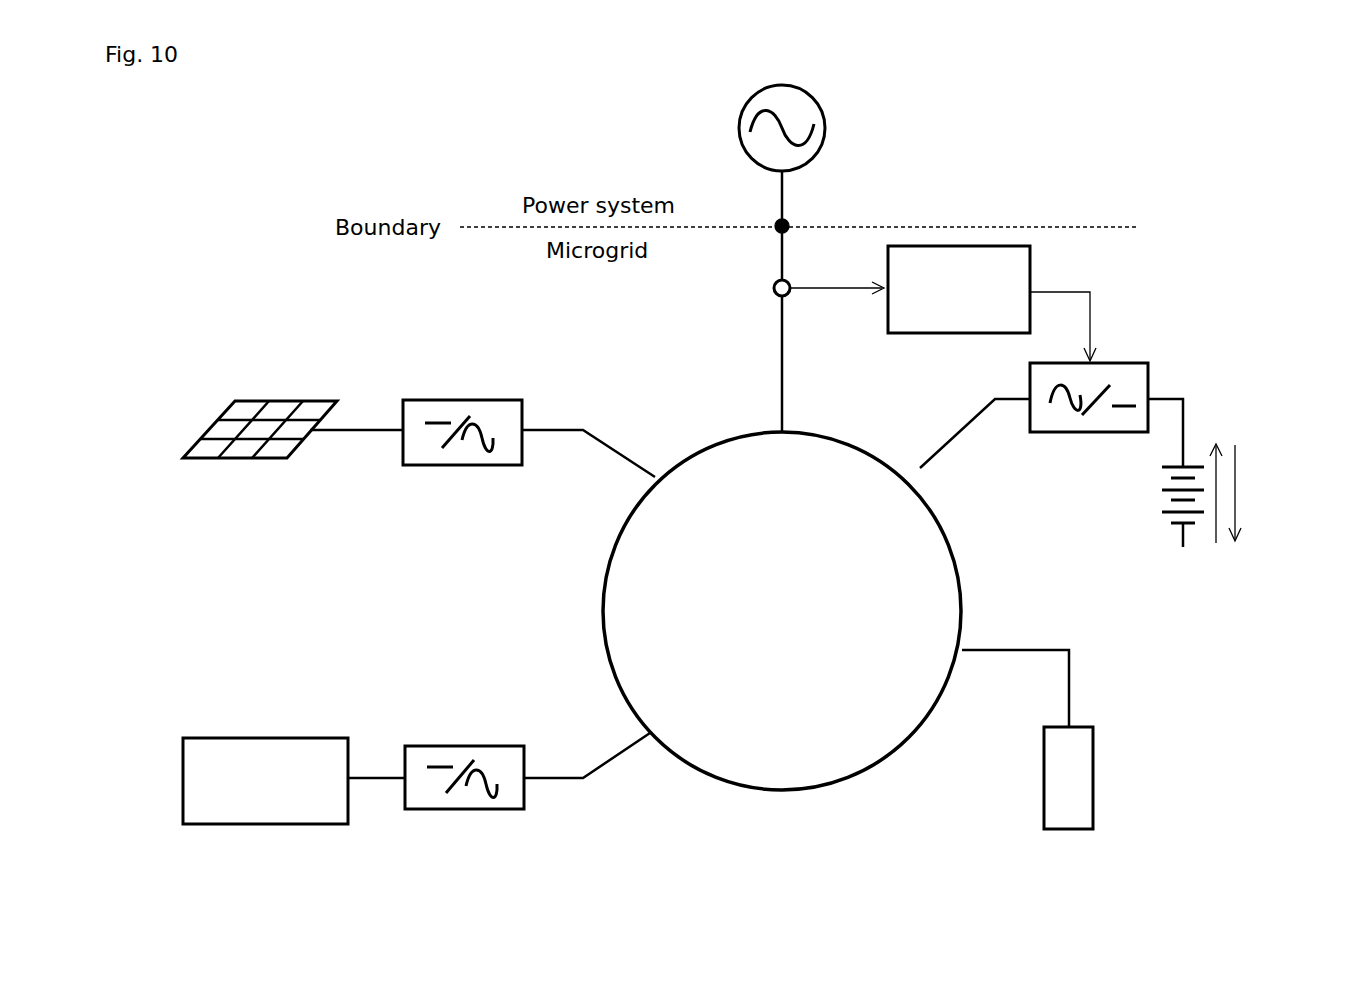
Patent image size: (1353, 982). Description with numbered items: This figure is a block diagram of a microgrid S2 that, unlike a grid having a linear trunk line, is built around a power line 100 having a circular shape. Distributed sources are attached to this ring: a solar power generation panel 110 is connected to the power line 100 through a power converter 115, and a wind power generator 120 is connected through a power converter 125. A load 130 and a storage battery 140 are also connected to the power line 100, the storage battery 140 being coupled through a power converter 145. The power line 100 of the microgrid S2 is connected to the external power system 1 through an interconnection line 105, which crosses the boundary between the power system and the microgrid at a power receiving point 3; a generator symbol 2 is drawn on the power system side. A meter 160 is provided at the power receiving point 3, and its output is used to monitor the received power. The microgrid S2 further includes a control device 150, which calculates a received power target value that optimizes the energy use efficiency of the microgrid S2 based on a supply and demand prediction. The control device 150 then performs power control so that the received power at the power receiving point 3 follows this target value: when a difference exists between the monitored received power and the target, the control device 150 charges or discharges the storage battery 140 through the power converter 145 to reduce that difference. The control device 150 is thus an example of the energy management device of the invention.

The power system 1 is at (708, 122).
The generator 2 is at (826, 117).
The power receiving point 3 is at (788, 221).
The power line 100 is at (892, 750).
The interconnection line 105 is at (776, 354).
The solar power generation panel 110 is at (286, 400).
The power converter 115 is at (450, 399).
The wind power generator 120 is at (265, 737).
The power converter 125 is at (447, 745).
The load 130 is at (1094, 772).
The storage battery 140 is at (1160, 495).
The power converter 145 is at (1122, 362).
The control device 150 is at (990, 245).
The meter 160 is at (770, 288).
The microgrid S2 is at (1191, 270).